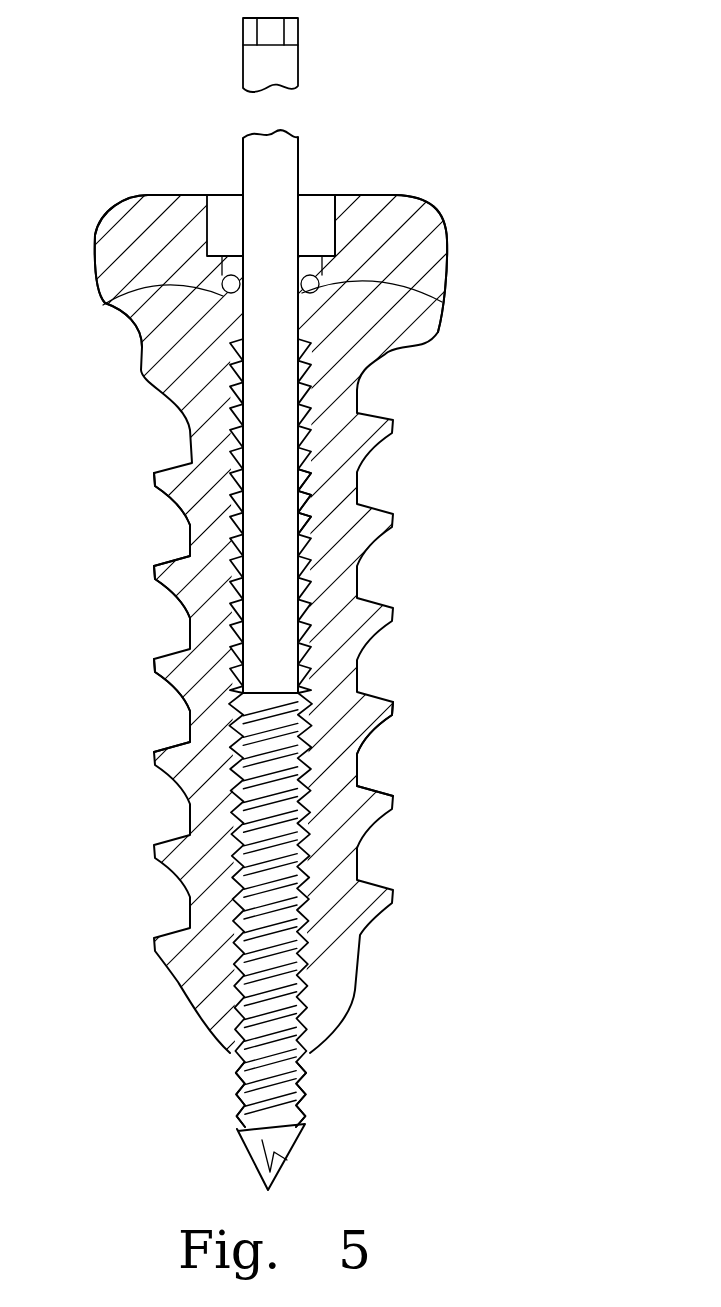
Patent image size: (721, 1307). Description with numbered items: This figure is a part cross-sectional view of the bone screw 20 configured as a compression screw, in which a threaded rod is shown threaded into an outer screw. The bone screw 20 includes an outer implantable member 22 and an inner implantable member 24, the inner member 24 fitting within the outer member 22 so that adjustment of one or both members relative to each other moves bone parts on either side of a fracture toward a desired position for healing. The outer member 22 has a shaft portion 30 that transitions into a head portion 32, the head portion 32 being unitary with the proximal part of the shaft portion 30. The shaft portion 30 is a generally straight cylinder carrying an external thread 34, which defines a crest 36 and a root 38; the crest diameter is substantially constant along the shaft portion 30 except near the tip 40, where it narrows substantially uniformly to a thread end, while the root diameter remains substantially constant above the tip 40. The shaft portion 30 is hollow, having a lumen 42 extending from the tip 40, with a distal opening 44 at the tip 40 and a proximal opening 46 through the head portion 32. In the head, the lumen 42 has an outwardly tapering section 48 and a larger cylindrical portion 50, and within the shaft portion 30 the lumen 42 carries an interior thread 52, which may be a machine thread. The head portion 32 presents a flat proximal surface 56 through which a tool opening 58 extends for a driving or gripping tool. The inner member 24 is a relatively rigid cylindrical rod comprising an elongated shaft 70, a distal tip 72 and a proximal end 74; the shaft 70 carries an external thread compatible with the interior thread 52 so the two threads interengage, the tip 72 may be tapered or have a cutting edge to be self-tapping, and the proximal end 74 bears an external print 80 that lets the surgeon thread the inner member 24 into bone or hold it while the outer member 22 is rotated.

The bone screw 20 is at (492, 413).
The outer implantable member 22 is at (360, 650).
The inner implantable member 24 is at (276, 950).
The shaft portion 30 is at (200, 707).
The head portion 32 is at (99, 222).
The external thread 34 is at (390, 711).
The crest 36 is at (153, 570).
The root 38 is at (190, 533).
The tip 40 is at (312, 1055).
The lumen 42 is at (311, 377).
The distal opening 44 is at (230, 1055).
The proximal opening 46 is at (320, 203).
The outwardly tapering section 48 is at (113, 305).
The larger cylindrical portion 50 is at (442, 302).
The interior thread 52 is at (307, 498).
The flat proximal surface 56 is at (182, 195).
The tool opening 58 is at (227, 215).
The elongated shaft 70 is at (273, 572).
The distal tip 72 is at (262, 1145).
The proximal end 74 is at (266, 55).
The external print 80 is at (246, 34).